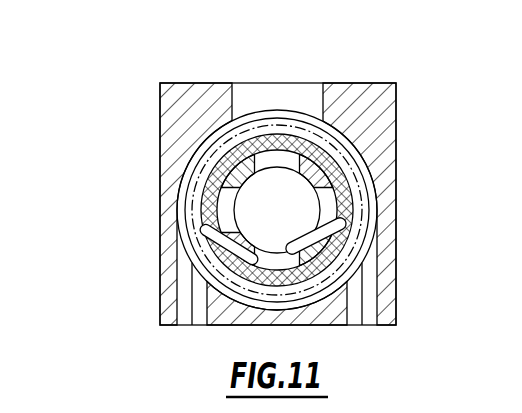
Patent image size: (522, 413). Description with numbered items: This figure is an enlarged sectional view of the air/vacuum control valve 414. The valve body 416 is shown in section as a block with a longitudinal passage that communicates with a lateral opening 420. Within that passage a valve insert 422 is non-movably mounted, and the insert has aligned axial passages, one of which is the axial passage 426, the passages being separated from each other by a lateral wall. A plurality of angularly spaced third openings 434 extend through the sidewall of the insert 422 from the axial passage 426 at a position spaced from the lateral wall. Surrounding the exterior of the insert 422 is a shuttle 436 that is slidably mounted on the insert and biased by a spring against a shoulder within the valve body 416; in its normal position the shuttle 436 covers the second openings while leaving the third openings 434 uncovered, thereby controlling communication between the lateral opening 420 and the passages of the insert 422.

The air/vacuum control valve 414 is at (136, 123).
The valve body 416 is at (168, 95).
The lateral opening 420 is at (240, 102).
The valve insert 422 is at (215, 163).
The axial passage 426 is at (296, 236).
The third openings 434 is at (203, 229).
The shuttle 436 is at (360, 186).